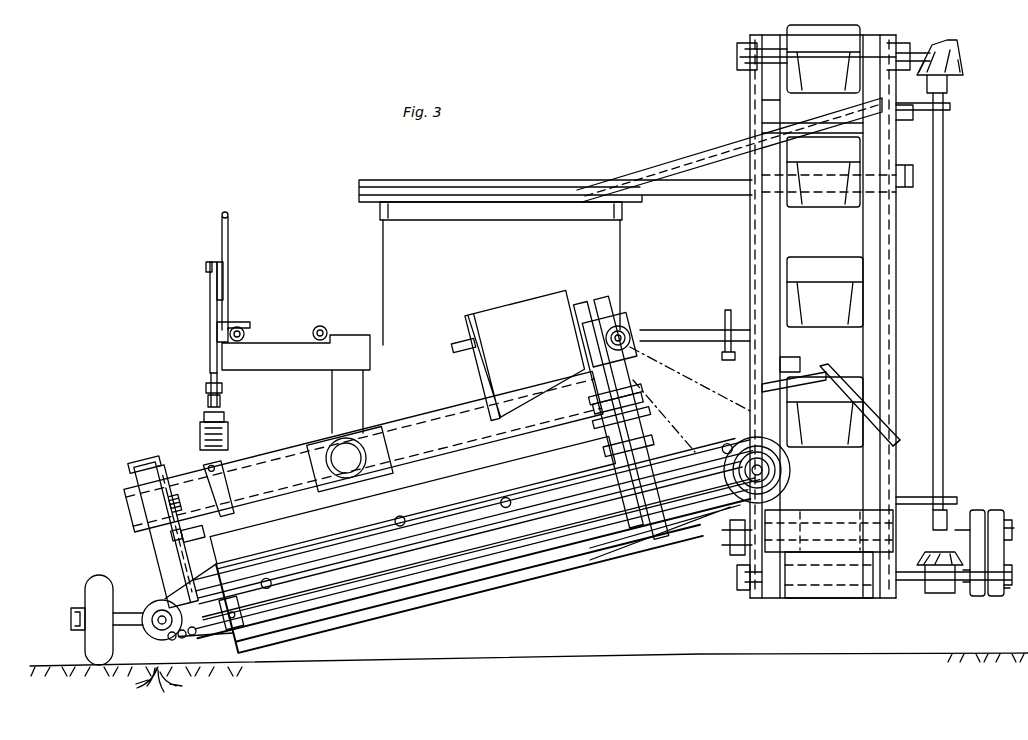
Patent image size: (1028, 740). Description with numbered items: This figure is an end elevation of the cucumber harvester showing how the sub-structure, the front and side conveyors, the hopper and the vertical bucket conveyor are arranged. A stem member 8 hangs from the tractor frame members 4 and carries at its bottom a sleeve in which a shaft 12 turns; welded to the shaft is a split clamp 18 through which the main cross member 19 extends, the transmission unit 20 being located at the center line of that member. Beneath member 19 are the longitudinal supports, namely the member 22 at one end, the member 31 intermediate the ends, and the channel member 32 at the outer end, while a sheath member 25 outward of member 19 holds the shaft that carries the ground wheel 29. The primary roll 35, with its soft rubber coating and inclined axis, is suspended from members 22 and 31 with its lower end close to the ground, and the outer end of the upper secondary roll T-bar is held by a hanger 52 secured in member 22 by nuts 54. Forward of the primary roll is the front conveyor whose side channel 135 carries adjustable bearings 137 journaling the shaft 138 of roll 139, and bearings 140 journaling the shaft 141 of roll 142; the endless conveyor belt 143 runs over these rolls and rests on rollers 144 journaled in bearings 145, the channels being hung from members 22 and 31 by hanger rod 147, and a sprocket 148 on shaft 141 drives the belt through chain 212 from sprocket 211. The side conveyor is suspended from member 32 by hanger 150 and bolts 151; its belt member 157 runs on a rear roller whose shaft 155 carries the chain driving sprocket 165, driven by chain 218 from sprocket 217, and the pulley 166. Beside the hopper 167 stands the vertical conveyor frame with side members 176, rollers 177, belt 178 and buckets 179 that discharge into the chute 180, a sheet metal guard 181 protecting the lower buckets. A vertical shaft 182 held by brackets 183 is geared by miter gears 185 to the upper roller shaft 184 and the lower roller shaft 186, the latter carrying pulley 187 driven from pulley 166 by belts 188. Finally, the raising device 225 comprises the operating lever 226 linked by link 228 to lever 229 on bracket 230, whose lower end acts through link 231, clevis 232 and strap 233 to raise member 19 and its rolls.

The tractor frame member 4 is at (300, 334).
The stem member 8 is at (332, 390).
The shaft 12 is at (362, 468).
The split clamp 18 is at (328, 442).
The main cross member 19 is at (284, 456).
The transmission unit 20 is at (510, 312).
The longitudinal support member 22 is at (196, 533).
The sheath member 25 is at (136, 496).
The wheel 29 is at (86, 602).
The longitudinal support member 31 is at (588, 418).
The channel member 32 is at (818, 368).
The primary roll 35 is at (565, 566).
The hanger 52 is at (176, 488).
The nuts 54 is at (186, 517).
The side channel 135 is at (374, 576).
The adjustable bearing 137 is at (238, 612).
The shaft 138 is at (152, 630).
The roll 139 is at (160, 600).
The bearing 140 is at (730, 440).
The shaft 141 is at (770, 463).
The roll 142 is at (780, 478).
The endless conveyor belt 143 is at (396, 516).
The roller 144 is at (273, 580).
The bearing 145 is at (500, 514).
The hanger rod 147 is at (622, 436).
The sprocket 148 is at (732, 432).
The hanger 150 is at (891, 416).
The bolts 151 is at (791, 354).
The shaft 155 is at (958, 512).
The continuous belt member 157 is at (840, 537).
The chain driving sprocket 165 is at (728, 546).
The pulley 166 is at (1012, 470).
The hopper 167 is at (505, 265).
The side member 176 is at (752, 266).
The roller 177 is at (878, 40).
The conveyor belt 178 is at (890, 276).
The bucket 179 is at (828, 205).
The chute 180 is at (672, 158).
The sheet metal guard 181 is at (842, 598).
The vertical shaft 182 is at (946, 402).
The bracket 183 is at (946, 106).
The shaft 184 is at (917, 60).
The miter gears 185 is at (941, 45).
The shaft 186 is at (955, 586).
The pulley 187 is at (1009, 590).
The belts 188 is at (1002, 527).
The sprocket 211 is at (636, 319).
The chain 212 is at (664, 339).
The sprocket 217 is at (718, 310).
The chain 218 is at (728, 372).
The raising and lowering device 225 is at (205, 266).
The operating lever 226 is at (230, 236).
The link 228 is at (224, 282).
The lever 229 is at (209, 314).
The bracket 230 is at (236, 321).
The link 231 is at (209, 400).
The clevis 232 is at (229, 426).
The strap 233 is at (244, 503).